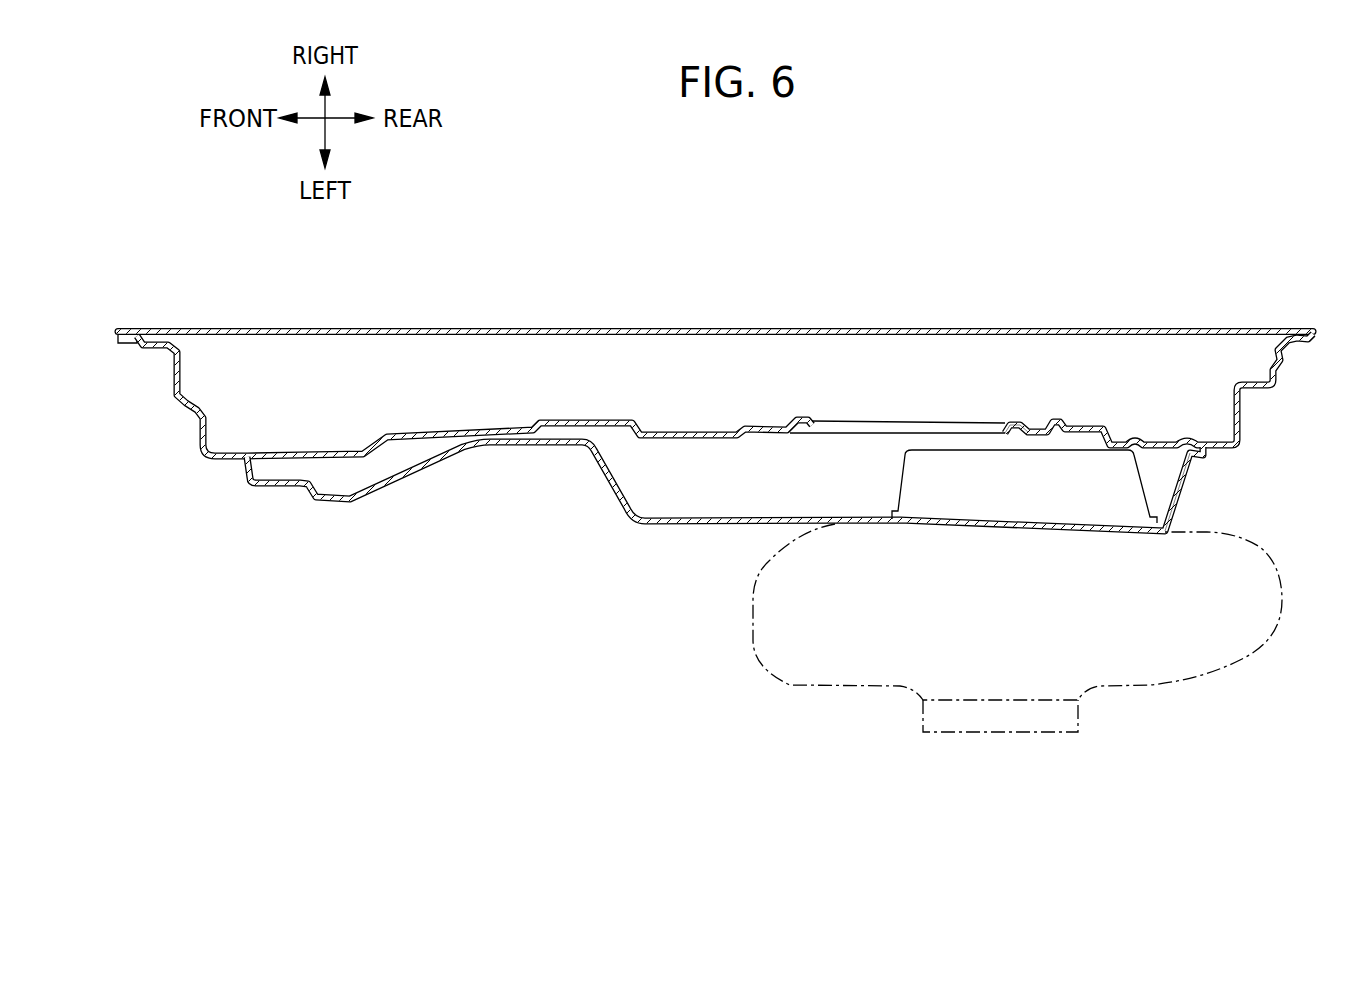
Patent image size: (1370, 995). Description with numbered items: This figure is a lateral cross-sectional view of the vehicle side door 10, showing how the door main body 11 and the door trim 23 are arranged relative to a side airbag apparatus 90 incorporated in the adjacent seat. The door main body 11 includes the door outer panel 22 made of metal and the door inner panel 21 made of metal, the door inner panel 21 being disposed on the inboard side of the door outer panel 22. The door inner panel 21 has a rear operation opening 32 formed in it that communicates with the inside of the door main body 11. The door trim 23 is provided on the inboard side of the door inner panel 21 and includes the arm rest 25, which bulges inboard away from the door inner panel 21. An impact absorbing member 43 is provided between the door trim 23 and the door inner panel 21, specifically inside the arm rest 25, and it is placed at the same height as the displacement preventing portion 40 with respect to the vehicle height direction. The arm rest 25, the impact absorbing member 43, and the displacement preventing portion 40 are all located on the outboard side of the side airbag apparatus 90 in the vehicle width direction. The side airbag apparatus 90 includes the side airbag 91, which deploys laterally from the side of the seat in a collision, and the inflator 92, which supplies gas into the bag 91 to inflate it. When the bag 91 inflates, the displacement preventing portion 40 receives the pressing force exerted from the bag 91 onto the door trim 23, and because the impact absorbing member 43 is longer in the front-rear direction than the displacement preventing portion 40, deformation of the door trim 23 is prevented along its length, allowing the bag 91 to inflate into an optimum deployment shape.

The vehicle side door 10 is at (725, 357).
The door main body 11 is at (715, 274).
The door inner panel 21 is at (489, 426).
The door outer panel 22 is at (570, 328).
The door trim 23 is at (730, 526).
The arm rest 25 is at (1198, 507).
The rear operation opening 32 is at (999, 422).
The displacement preventing portion 40 is at (1040, 432).
The impact absorbing member 43 is at (1148, 483).
The side airbag apparatus 90 is at (1017, 696).
The side airbag 91 is at (767, 660).
The inflator 92 is at (974, 762).